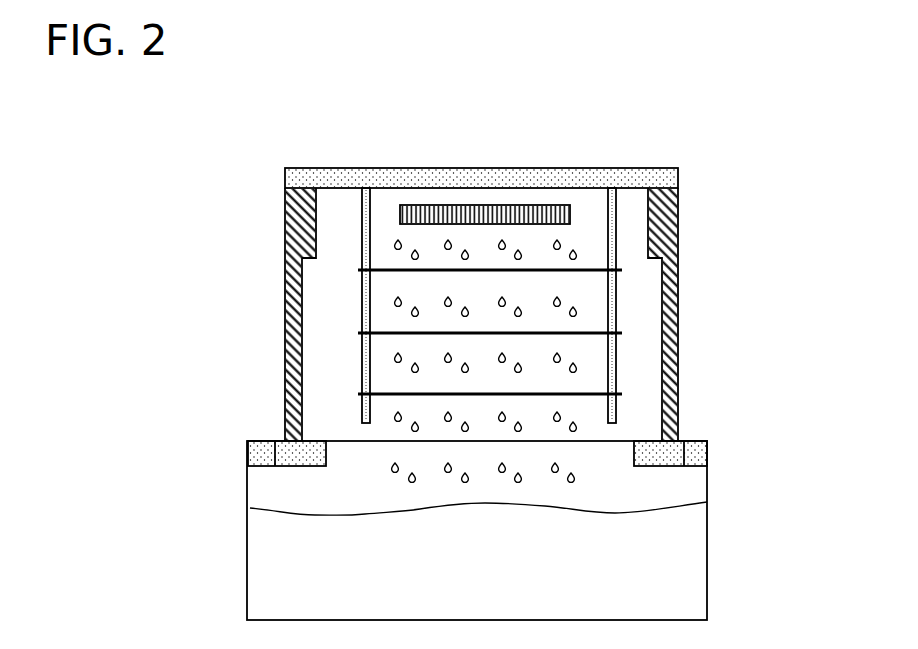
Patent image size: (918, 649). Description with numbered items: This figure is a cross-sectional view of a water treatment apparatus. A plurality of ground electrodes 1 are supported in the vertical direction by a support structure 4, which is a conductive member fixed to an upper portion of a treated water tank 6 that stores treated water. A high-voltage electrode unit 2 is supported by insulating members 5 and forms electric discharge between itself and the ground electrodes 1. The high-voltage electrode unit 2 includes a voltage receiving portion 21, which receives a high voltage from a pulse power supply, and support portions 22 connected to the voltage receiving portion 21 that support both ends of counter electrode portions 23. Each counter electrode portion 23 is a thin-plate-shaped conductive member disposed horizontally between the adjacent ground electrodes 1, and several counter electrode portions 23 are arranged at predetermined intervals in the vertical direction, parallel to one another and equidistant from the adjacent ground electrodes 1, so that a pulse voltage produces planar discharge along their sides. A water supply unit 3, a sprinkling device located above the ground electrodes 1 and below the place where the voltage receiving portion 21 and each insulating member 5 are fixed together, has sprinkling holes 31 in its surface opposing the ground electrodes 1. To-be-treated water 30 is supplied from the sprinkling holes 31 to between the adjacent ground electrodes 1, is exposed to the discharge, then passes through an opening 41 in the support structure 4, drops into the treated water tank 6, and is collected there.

The ground electrode 1 is at (633, 362).
The high-voltage electrode unit 2 is at (498, 168).
The voltage receiving portion 21 is at (568, 177).
The water supply unit 3 is at (403, 212).
The to-be-treated water 30 is at (396, 246).
The sprinkling hole 31 is at (555, 224).
The support portion 22 is at (362, 304).
The counter electrode portion 23 is at (368, 333).
The insulating member 5 is at (680, 401).
The support structure 4 is at (287, 455).
The opening 41 is at (377, 452).
The treated water tank 6 is at (247, 587).